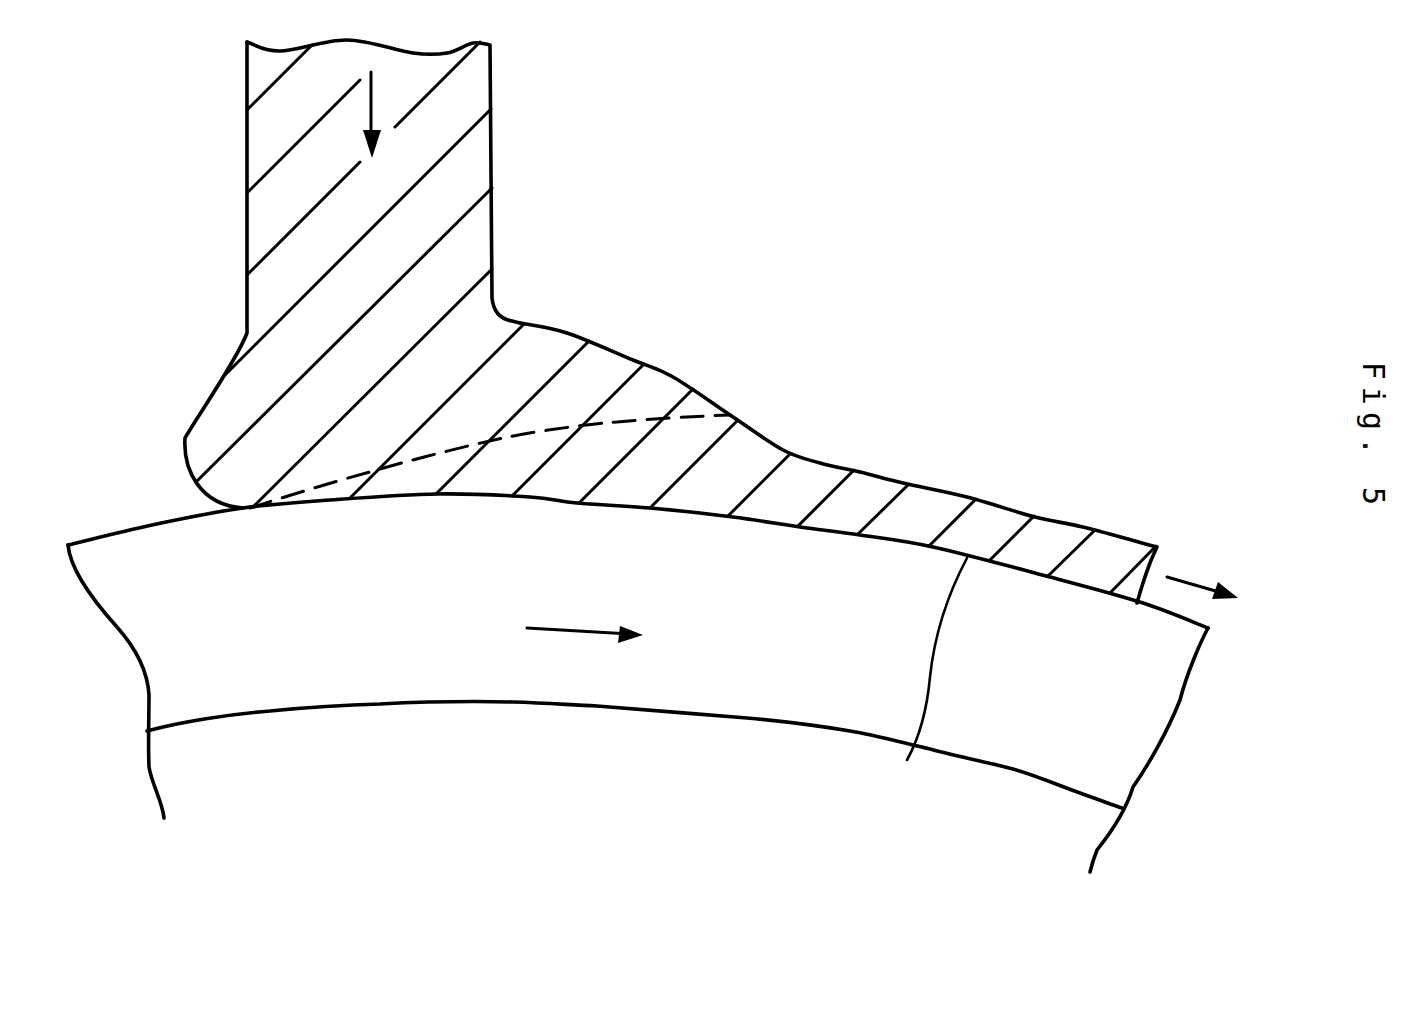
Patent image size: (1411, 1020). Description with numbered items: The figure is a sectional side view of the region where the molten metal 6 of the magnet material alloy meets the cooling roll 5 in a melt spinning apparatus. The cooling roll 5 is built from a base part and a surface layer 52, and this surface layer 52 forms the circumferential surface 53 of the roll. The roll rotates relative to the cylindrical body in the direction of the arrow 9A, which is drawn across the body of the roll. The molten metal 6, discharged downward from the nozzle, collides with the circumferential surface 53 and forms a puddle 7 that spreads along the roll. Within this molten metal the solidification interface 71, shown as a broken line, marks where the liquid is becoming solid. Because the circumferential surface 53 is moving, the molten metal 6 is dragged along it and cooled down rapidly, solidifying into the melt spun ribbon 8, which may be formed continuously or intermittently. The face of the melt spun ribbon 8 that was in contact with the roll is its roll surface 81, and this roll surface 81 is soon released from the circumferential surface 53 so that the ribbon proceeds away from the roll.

The cooling roll 5 is at (624, 625).
The surface layer 52 is at (382, 668).
The circumferential surface 53 is at (152, 525).
The molten metal 6 is at (280, 159).
The puddle 7 is at (553, 378).
The solidification interface 71 is at (617, 420).
The melt spun ribbon 8 is at (1100, 553).
The roll surface 81 is at (926, 681).
The arrow indicating rotation direction of cooling roll 9A is at (585, 617).